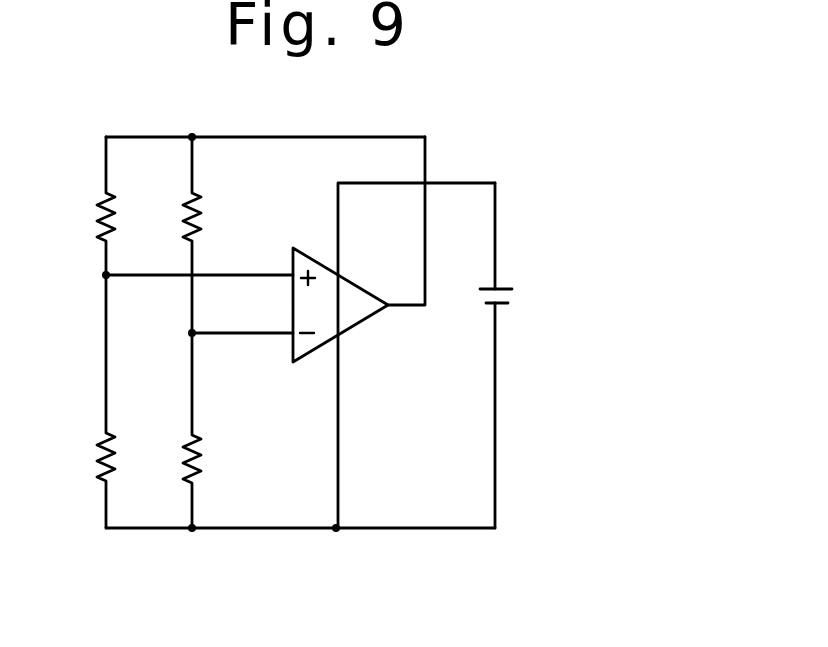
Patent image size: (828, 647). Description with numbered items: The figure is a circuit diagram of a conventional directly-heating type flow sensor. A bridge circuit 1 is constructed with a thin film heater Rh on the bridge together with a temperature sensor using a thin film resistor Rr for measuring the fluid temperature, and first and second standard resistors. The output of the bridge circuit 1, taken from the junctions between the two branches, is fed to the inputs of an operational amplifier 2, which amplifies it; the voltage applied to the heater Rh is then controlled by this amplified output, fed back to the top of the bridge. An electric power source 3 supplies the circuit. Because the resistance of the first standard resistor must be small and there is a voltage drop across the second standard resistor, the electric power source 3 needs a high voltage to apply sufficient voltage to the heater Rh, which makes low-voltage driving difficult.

The bridge circuit 1 is at (132, 432).
The operational amplifier 2 is at (363, 322).
The electric power source 3 is at (512, 300).